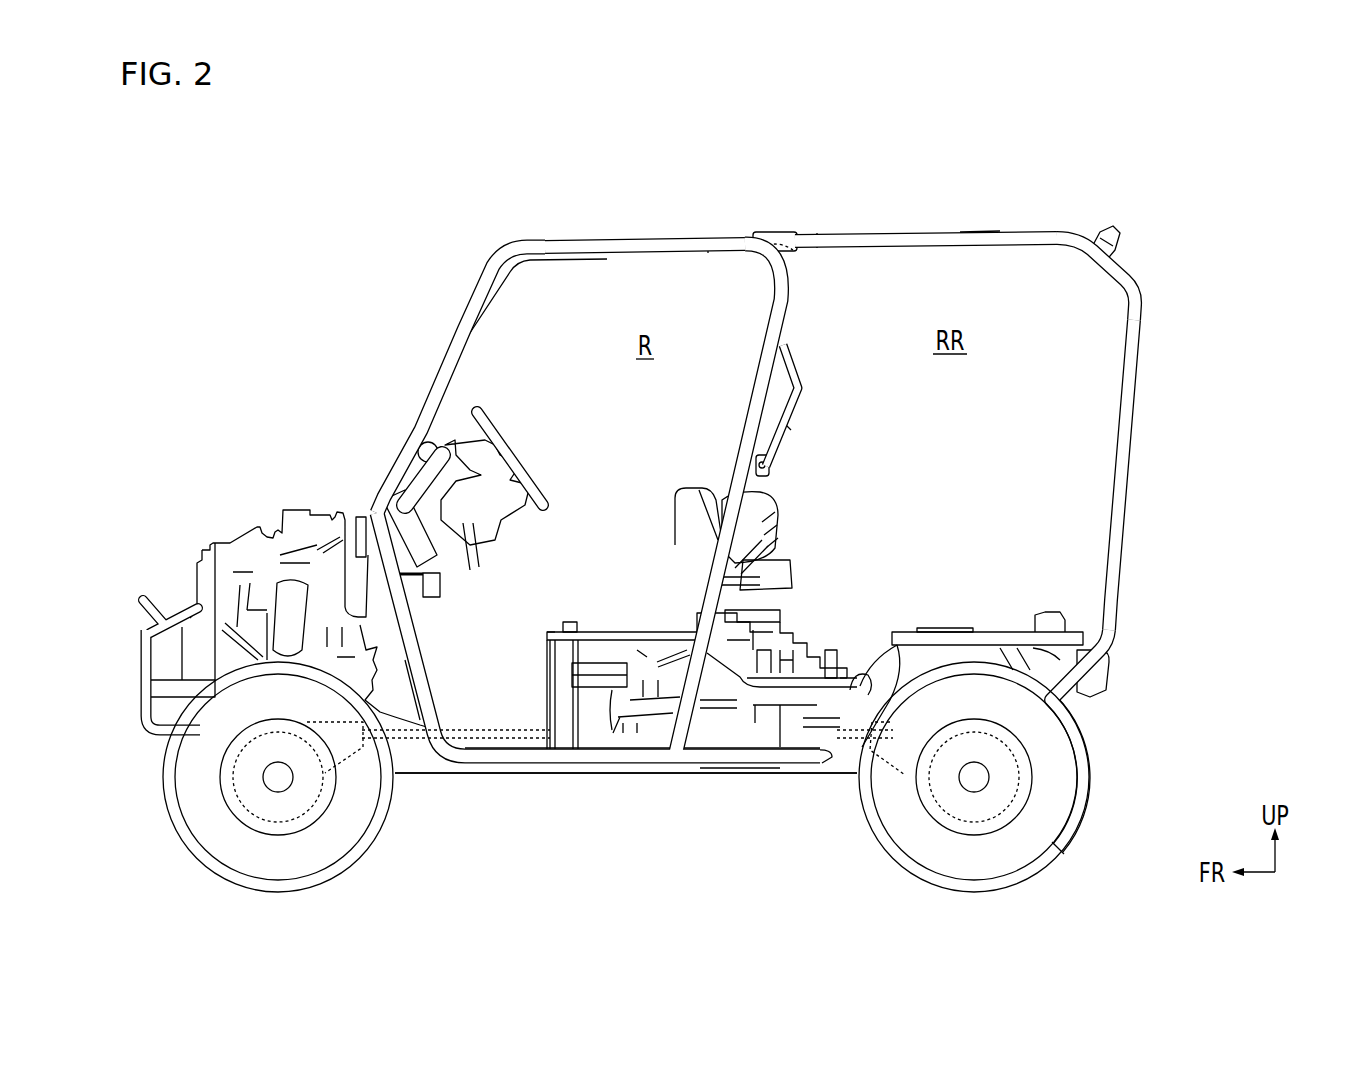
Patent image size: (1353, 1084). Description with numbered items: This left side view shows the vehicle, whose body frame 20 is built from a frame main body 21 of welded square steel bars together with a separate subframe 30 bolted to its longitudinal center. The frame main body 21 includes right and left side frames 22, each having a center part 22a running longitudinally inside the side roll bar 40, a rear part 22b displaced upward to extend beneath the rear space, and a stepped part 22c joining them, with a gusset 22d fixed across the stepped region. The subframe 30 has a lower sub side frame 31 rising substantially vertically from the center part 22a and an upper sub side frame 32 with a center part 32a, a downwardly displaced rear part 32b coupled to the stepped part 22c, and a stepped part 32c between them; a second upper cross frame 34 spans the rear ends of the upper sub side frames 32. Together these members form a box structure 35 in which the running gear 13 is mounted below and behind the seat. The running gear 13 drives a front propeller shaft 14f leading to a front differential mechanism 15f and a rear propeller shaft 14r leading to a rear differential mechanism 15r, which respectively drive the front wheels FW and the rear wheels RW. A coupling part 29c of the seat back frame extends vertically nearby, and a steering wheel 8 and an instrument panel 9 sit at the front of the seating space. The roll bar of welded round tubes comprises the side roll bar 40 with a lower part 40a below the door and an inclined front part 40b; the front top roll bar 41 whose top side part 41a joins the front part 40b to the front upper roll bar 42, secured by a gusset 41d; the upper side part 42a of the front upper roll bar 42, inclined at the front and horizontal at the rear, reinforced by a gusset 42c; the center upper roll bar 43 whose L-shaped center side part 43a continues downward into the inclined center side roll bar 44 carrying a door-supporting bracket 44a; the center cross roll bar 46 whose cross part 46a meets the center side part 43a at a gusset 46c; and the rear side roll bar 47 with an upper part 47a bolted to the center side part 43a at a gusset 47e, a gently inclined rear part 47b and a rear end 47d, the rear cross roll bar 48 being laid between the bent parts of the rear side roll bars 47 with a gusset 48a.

The steering wheel 8 is at (490, 425).
The instrument panel 9 is at (430, 485).
The running gear 13 is at (793, 620).
The front propeller shaft 14f is at (483, 740).
The rear propeller shaft 14r is at (850, 762).
The front differential mechanism 15f is at (330, 775).
The rear differential mechanism 15r is at (905, 780).
The body frame 20 is at (430, 789).
The frame main body 21 is at (542, 789).
The side frame 22 is at (578, 776).
The center part 22a is at (660, 776).
The rear part 22b is at (990, 640).
The stepped part 22c is at (862, 688).
The gusset 22d is at (833, 757).
The coupling part 29c is at (752, 660).
The subframe 30 is at (537, 656).
The lower sub side frame 31 is at (560, 688).
The upper sub side frame 32 is at (571, 620).
The center part 32a is at (620, 632).
The rear part 32b is at (840, 680).
The stepped part 32c is at (730, 578).
The second upper cross frame 34 is at (833, 652).
The box structure 35 is at (538, 614).
The side roll bar 40 is at (424, 631).
The lower part 40a is at (618, 762).
The front part 40b is at (423, 697).
The front top roll bar 41 is at (372, 455).
The top side part 41a is at (370, 497).
The gusset 41d is at (360, 517).
The front upper roll bar 42 is at (472, 283).
The upper side part 42a is at (640, 240).
The gusset 42c is at (528, 273).
The center upper roll bar 43 is at (805, 312).
The center side part 43a is at (766, 347).
The center side roll bar 44 is at (701, 557).
The bracket 44a is at (674, 500).
The center cross roll bar 46 is at (818, 396).
The cross part 46a is at (781, 427).
The gusset 46c is at (771, 476).
The rear side roll bar 47 is at (969, 219).
The upper part 47a is at (883, 236).
The rear part 47b is at (1125, 437).
The rear end 47d is at (1080, 667).
The gusset 47e is at (778, 232).
The rear cross roll bar 48 is at (1116, 230).
The gusset 48a is at (1085, 232).
The front wheel FW is at (190, 835).
The rear wheel RW is at (1040, 860).